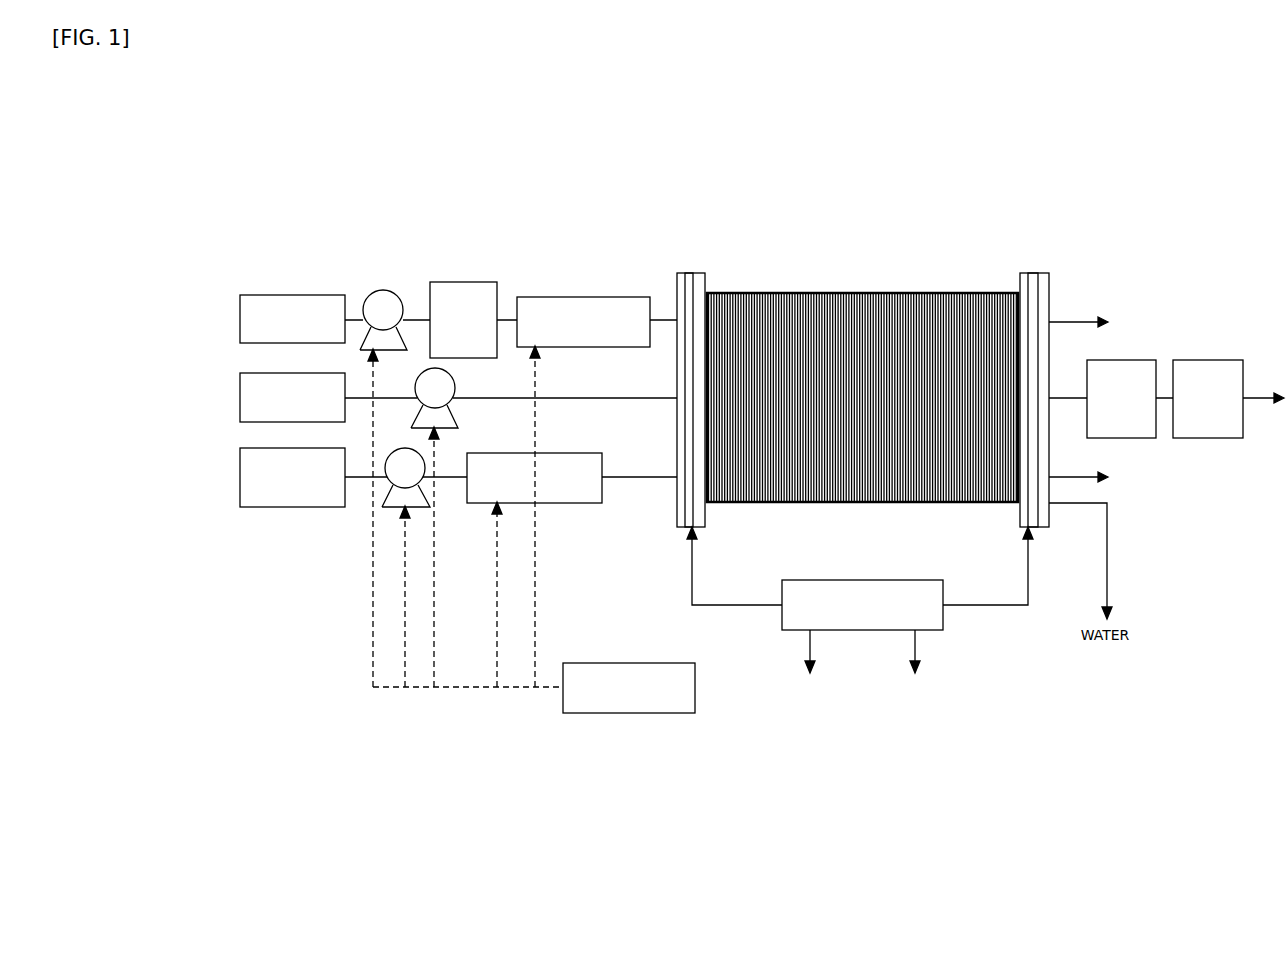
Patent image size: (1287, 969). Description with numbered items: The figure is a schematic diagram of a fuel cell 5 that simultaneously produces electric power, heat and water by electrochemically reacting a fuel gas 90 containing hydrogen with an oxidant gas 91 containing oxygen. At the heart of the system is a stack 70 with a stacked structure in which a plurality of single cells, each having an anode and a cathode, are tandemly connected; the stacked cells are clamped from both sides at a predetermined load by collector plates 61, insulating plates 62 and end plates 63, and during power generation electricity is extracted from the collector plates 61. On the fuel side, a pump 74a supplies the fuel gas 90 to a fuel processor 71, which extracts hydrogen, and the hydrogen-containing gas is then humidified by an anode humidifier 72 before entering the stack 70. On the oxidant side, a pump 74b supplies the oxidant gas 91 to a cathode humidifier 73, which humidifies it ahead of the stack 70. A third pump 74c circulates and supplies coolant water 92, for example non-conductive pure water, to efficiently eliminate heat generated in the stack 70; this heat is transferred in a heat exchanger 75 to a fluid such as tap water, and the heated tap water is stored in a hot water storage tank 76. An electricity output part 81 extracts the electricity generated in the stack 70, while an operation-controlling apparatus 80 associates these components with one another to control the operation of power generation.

The fuel cell 5 is at (1112, 186).
The collector plate 61 is at (707, 292).
The insulating plate 62 is at (689, 273).
The end plate 63 is at (677, 280).
The stack 70 is at (872, 282).
The fuel processor 71 is at (478, 282).
The anode humidifier 72 is at (560, 297).
The cathode humidifier 73 is at (590, 505).
The pump 74a is at (383, 290).
The pump 74b is at (392, 507).
The pump 74c is at (456, 381).
The heat exchanger 75 is at (1140, 360).
The hot water storage tank 76 is at (1222, 360).
The operation-controlling apparatus 80 is at (592, 715).
The electricity output part 81 is at (890, 580).
The fuel gas 90 is at (238, 320).
The oxidant gas 91 is at (238, 470).
The coolant water 92 is at (238, 398).